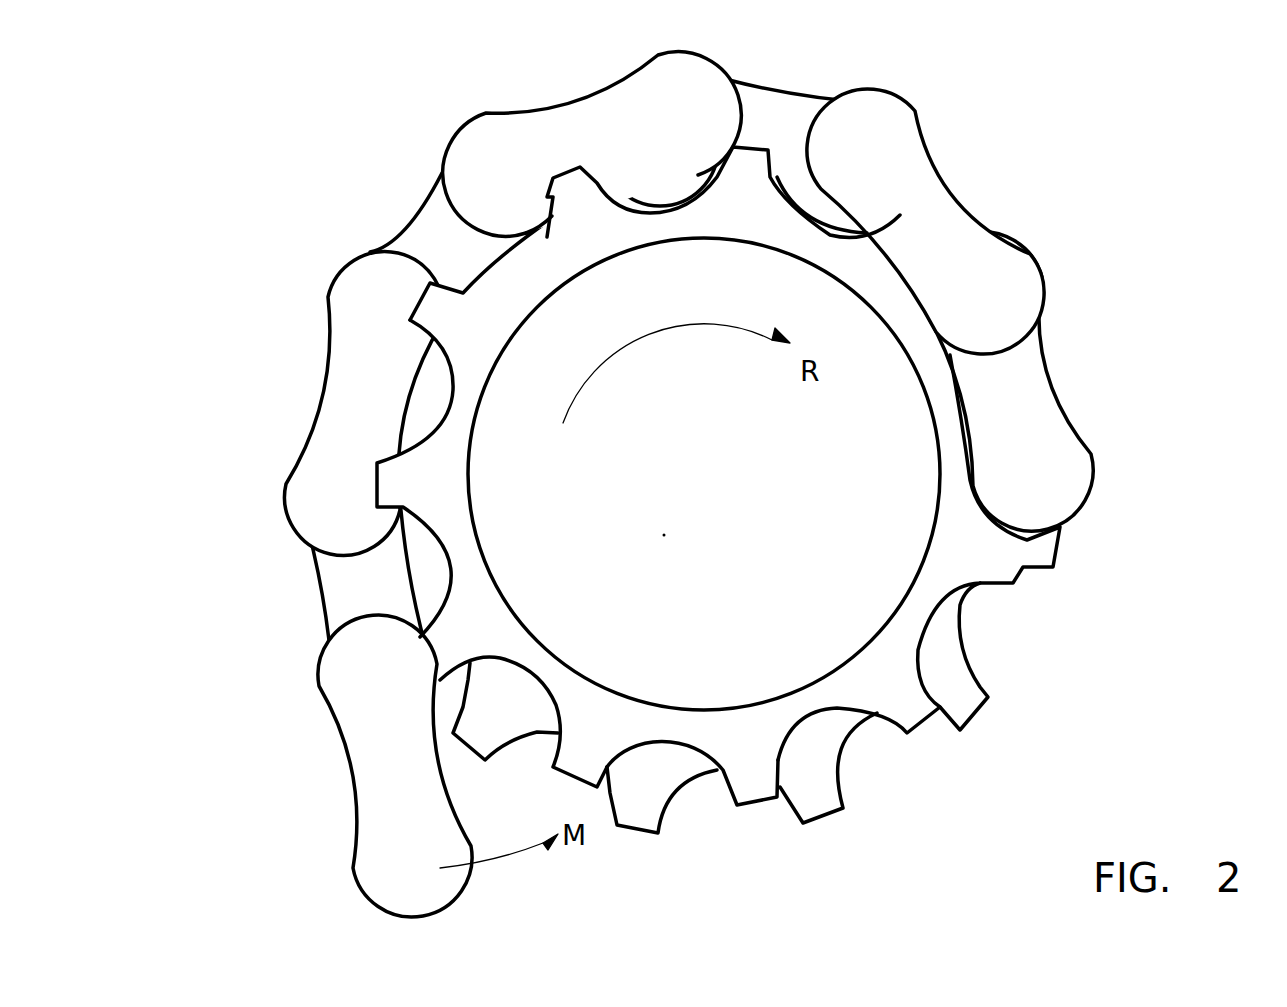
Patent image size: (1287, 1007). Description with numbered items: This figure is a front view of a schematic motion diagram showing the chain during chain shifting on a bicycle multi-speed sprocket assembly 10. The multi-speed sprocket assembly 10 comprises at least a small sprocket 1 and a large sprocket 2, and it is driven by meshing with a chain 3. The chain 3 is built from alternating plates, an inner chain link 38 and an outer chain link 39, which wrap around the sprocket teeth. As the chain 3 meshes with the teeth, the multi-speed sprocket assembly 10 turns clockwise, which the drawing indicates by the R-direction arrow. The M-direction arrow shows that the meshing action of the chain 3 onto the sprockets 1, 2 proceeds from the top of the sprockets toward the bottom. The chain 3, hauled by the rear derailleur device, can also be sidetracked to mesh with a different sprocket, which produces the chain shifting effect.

The multi-speed sprocket assembly 10 is at (695, 484).
The outer chain link 39 is at (338, 403).
The inner chain link 38 is at (337, 587).
The chain 3 is at (1067, 470).
The large sprocket 2 is at (962, 690).
The small sprocket 1 is at (912, 720).